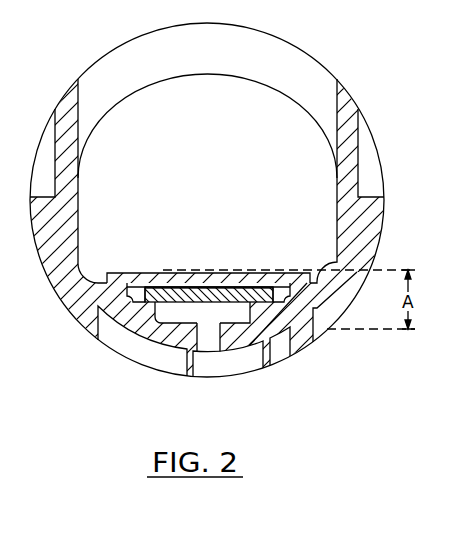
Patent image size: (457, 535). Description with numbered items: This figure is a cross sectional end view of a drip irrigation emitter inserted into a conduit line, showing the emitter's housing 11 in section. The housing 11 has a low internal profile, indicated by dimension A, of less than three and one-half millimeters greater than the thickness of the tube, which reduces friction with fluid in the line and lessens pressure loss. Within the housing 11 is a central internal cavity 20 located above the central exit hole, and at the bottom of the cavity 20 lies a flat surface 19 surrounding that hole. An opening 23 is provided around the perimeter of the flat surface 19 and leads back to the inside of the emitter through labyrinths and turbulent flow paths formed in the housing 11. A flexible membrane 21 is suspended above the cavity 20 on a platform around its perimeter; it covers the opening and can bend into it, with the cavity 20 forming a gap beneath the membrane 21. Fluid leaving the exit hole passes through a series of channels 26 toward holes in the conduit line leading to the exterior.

The housing 11 is at (171, 356).
The flat surface 19 is at (227, 321).
The central internal cavity 20 is at (183, 312).
The flexible membrane 21 is at (242, 292).
The opening 23 is at (250, 321).
The channels 26 is at (235, 362).